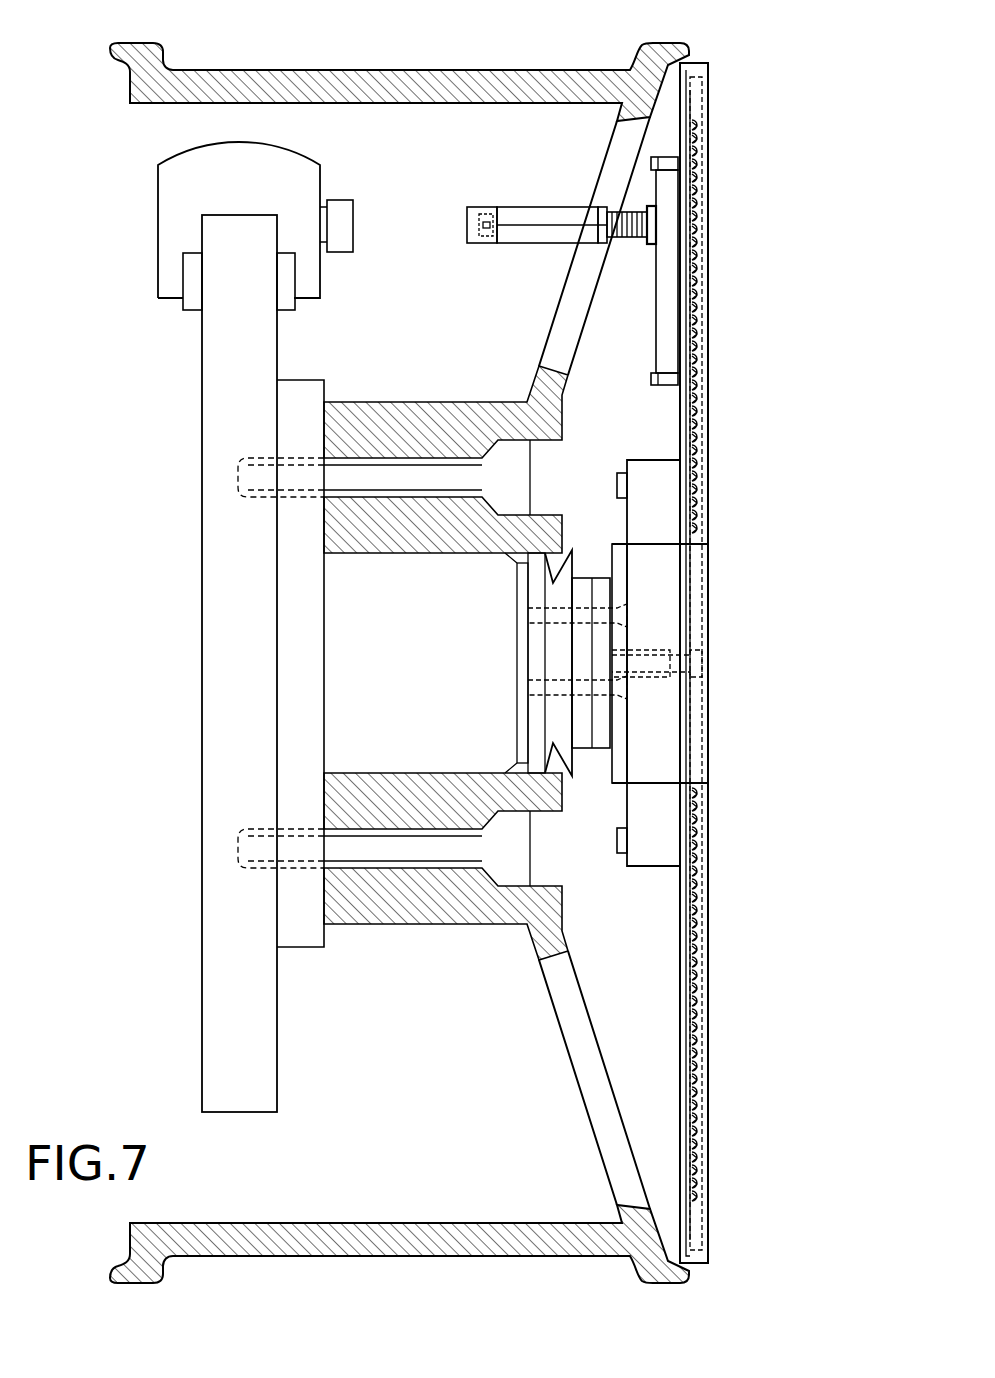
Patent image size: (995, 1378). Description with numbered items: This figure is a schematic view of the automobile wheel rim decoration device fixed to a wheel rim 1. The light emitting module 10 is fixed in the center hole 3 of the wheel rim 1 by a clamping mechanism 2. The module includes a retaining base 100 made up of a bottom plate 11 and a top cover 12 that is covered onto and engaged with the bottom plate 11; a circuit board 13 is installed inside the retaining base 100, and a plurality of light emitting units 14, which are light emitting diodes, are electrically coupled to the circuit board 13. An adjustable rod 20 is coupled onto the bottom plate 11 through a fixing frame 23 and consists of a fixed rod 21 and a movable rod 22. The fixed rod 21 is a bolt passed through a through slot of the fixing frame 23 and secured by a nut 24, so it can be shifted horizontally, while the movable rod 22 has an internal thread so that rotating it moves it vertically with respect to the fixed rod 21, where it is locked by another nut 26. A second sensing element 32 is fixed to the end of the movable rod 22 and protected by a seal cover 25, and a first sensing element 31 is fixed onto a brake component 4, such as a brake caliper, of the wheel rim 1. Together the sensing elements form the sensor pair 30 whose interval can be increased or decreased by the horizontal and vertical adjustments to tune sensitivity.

The wheel rim 1 is at (480, 92).
The clamping mechanism 2 is at (582, 748).
The center hole 3 is at (370, 688).
The brake component 4 is at (225, 385).
The light emitting module 10 is at (709, 663).
The bottom plate 11 is at (665, 488).
The top cover 12 is at (707, 588).
The circuit board 13 is at (687, 108).
The light emitting units 14 is at (697, 213).
The adjustable rod 20 is at (589, 253).
The fixed rod 21 is at (628, 233).
The movable rod 22 is at (568, 215).
The fixing frame 23 is at (663, 302).
The nut 24 is at (657, 233).
The seal cover 25 is at (473, 217).
The nut 26 is at (590, 231).
The sensor unit 30 is at (406, 291).
The first sensing element 31 is at (347, 228).
The second sensing element 32 is at (468, 274).
The retaining base 100 is at (780, 485).